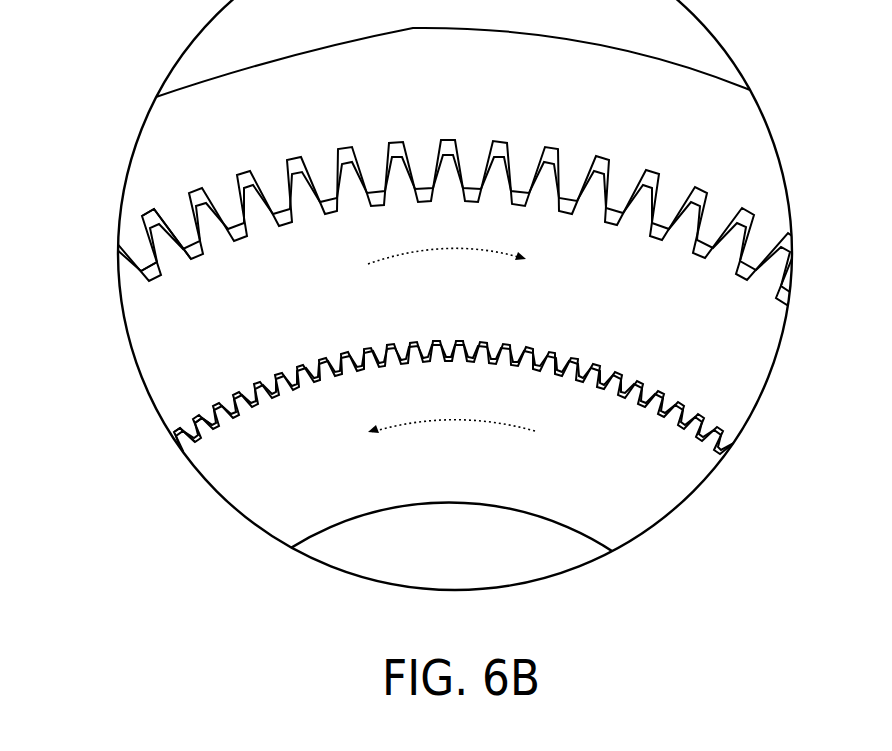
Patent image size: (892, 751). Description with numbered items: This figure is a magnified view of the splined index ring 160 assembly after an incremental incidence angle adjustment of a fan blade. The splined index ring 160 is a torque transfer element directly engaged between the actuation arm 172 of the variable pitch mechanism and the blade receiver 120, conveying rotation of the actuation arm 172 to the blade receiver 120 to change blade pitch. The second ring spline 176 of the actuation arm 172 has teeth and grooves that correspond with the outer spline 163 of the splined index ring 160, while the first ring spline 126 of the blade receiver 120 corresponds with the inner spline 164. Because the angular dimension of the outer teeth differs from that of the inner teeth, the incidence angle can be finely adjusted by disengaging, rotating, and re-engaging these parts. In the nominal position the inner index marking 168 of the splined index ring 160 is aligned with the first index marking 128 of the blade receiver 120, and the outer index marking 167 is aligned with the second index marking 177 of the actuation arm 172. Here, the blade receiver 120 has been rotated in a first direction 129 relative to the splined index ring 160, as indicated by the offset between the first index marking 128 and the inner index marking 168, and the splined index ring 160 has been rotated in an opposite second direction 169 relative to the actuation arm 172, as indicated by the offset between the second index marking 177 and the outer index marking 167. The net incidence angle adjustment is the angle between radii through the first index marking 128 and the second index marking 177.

The blade receiver 120 is at (282, 461).
The first ring spline 126 is at (199, 441).
The first index marking 128 is at (406, 376).
The first direction 129 is at (466, 432).
The splined index ring 160 is at (255, 313).
The outer spline 163 is at (137, 288).
The inner spline 164 is at (172, 419).
The outer index marking 167 is at (447, 197).
The inner index marking 168 is at (451, 322).
The second direction 169 is at (418, 258).
The actuation arm 172 is at (218, 136).
The second ring spline 176 is at (136, 220).
The second index marking 177 is at (400, 120).